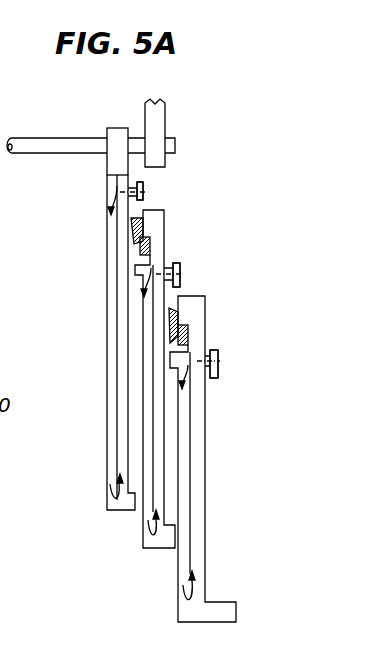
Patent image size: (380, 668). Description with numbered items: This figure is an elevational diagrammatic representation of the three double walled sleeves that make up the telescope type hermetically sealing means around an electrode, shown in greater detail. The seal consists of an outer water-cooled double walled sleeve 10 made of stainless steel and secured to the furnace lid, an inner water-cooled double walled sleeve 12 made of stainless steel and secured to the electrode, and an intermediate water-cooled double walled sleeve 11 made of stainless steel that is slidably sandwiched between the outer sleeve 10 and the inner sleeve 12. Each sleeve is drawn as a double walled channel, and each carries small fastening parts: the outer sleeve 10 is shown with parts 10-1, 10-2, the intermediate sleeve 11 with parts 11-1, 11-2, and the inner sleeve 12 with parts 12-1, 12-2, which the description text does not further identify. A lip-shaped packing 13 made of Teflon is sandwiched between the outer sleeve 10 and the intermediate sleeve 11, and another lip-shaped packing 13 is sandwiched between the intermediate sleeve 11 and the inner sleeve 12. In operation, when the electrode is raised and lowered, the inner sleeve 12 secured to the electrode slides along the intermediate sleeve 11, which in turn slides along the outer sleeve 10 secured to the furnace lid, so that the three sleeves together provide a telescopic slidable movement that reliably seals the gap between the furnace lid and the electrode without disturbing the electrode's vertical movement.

The outer water-cooled double walled sleeve 10 is at (200, 478).
The adjusting screw of third channel 10-1 is at (237, 364).
The adjusting screw of third channel 10-2 is at (267, 364).
The intermediate water-cooled double walled sleeve 11 is at (160, 222).
The adjusting screw of second channel 11-1 is at (197, 276).
The adjusting screw of second channel 11-2 is at (229, 276).
The inner water-cooled double walled sleeve 12 is at (107, 447).
The adjusting screw of first channel 12-1 is at (160, 193).
The adjusting screw of first channel 12-2 is at (192, 193).
The lip-shaped packing 13 is at (150, 231).